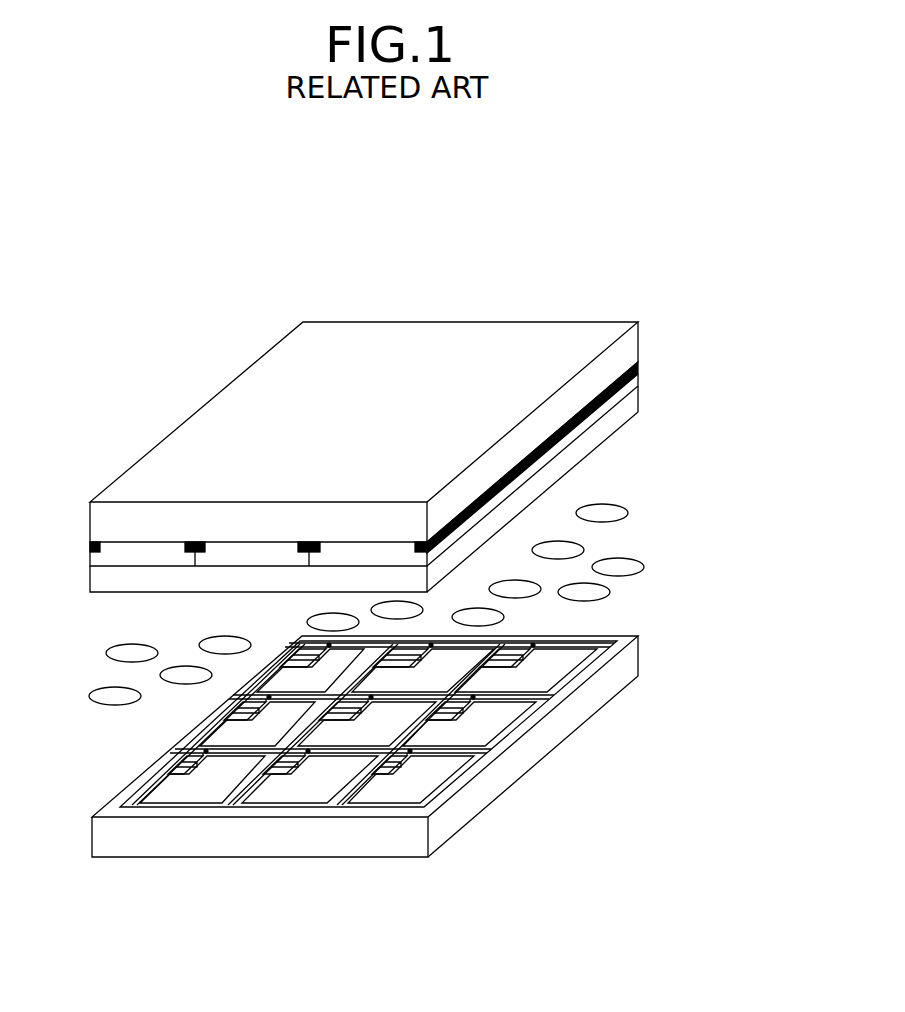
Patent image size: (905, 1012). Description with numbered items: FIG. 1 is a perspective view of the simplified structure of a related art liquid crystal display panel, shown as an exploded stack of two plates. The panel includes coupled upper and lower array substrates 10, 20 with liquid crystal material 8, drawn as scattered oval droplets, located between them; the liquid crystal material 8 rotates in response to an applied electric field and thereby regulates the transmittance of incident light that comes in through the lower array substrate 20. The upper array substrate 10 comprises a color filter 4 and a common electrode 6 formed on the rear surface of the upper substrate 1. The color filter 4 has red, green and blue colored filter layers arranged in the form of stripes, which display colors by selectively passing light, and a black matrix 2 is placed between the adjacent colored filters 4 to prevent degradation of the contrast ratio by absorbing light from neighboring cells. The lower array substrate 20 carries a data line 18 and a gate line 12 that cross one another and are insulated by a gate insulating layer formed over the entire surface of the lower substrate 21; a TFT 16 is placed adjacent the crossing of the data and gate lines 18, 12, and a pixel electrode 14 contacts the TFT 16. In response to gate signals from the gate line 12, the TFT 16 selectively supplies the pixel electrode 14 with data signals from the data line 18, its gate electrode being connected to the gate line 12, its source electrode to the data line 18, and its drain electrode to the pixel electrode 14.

The upper array substrate 10 is at (407, 430).
The upper substrate 1 is at (640, 348).
The black matrix 2 is at (88, 547).
The color filter 4 is at (367, 465).
The common electrode 6 is at (640, 407).
The liquid crystal material 8 is at (626, 513).
The lower array substrate 20 is at (450, 811).
The lower substrate 21 is at (642, 667).
The gate line 12 is at (553, 697).
The pixel electrode 14 is at (437, 773).
The TFT 16 is at (405, 767).
The data line 18 is at (330, 805).